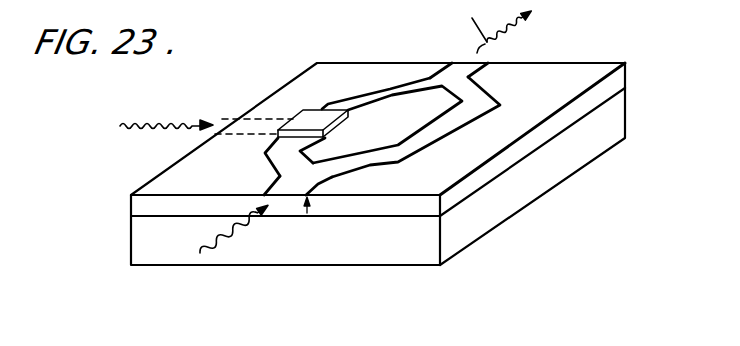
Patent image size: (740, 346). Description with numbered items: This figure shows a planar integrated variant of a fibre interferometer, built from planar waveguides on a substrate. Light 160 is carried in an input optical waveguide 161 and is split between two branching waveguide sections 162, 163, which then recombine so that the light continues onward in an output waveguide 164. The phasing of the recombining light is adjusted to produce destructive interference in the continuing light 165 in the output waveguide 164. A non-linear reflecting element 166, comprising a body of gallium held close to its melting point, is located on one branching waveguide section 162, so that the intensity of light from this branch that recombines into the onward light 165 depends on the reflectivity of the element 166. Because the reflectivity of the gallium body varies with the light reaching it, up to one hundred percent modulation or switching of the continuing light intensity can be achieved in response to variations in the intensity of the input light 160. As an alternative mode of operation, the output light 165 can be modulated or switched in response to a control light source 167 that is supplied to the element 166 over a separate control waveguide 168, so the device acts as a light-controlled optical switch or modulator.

The light 160 is at (236, 240).
The input optical waveguide 161 is at (275, 182).
The branching waveguide section 162 is at (265, 153).
The branching waveguide section 163 is at (388, 154).
The output waveguide 164 is at (447, 71).
The continuing light 165 is at (477, 26).
The non-linear reflecting element 166 is at (305, 118).
The control light source 167 is at (128, 102).
The control waveguide 168 is at (228, 119).